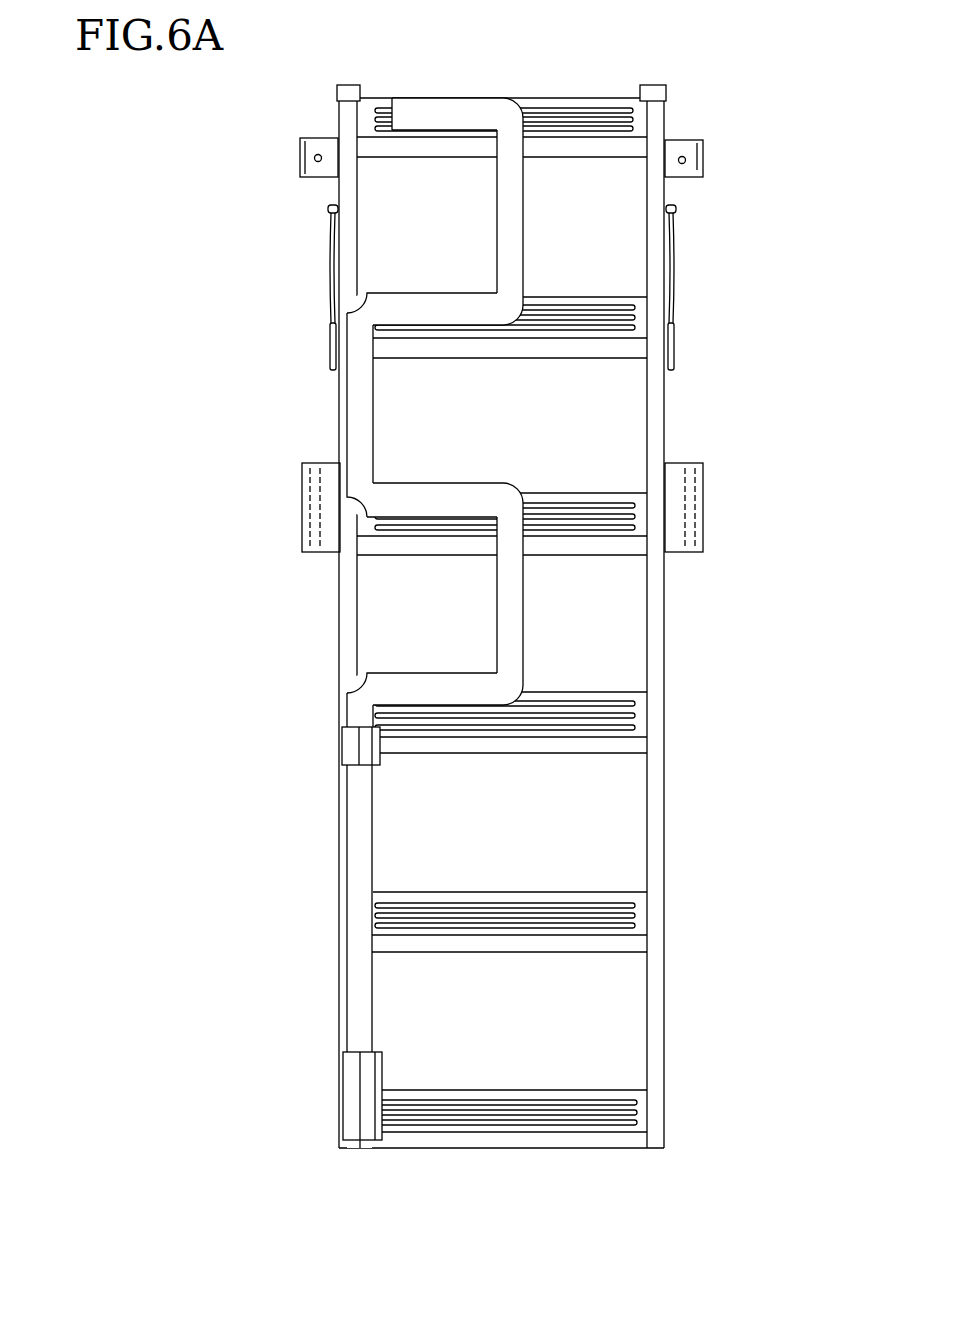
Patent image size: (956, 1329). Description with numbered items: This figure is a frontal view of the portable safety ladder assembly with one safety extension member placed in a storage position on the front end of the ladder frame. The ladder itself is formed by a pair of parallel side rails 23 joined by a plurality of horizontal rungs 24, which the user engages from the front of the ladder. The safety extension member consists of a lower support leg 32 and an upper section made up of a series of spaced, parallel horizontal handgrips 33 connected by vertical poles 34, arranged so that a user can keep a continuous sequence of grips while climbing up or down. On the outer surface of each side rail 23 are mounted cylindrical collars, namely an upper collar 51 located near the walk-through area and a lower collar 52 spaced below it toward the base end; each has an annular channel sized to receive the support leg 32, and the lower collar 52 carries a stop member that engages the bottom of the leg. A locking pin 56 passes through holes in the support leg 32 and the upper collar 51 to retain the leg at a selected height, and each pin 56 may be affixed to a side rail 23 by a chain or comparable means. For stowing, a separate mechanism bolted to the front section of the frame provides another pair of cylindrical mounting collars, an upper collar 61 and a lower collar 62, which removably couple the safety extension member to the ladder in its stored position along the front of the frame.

The side rail 23 is at (340, 655).
The horizontal rung 24 is at (563, 105).
The support leg 32 is at (355, 945).
The horizontal handgrip 33 is at (408, 102).
The vertical pole 34 is at (520, 222).
The upper collar 51 is at (300, 152).
The lower collar 52 is at (302, 507).
The locking pin 56 is at (328, 352).
The upper collar 61 is at (350, 748).
The lower collar 62 is at (343, 1090).